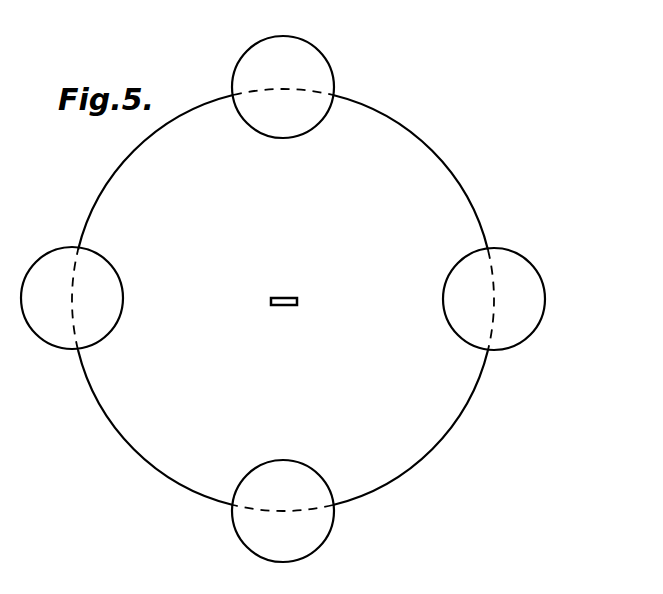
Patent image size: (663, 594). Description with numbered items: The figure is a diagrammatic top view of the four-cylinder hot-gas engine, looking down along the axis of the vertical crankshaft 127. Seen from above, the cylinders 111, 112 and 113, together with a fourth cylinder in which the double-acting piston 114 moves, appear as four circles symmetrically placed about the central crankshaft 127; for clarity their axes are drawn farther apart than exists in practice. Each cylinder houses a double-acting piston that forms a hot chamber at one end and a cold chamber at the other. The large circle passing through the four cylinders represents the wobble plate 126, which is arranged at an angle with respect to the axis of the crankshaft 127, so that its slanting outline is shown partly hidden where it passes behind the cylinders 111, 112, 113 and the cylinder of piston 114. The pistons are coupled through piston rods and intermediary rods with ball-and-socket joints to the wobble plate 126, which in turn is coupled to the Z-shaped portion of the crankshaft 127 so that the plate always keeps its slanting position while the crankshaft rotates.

The cylinder 111 is at (334, 75).
The cylinder 112 is at (520, 252).
The cylinder 113 is at (334, 527).
The double-acting piston 114 is at (62, 350).
The wobble plate 126 is at (442, 153).
The crankshaft 127 is at (277, 306).